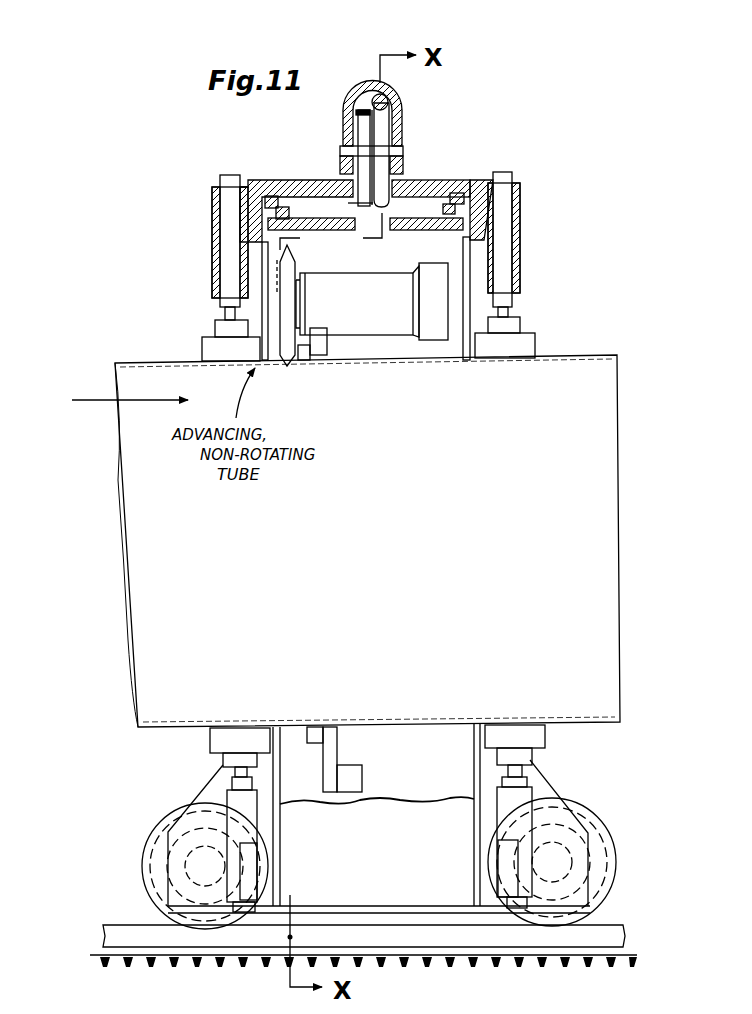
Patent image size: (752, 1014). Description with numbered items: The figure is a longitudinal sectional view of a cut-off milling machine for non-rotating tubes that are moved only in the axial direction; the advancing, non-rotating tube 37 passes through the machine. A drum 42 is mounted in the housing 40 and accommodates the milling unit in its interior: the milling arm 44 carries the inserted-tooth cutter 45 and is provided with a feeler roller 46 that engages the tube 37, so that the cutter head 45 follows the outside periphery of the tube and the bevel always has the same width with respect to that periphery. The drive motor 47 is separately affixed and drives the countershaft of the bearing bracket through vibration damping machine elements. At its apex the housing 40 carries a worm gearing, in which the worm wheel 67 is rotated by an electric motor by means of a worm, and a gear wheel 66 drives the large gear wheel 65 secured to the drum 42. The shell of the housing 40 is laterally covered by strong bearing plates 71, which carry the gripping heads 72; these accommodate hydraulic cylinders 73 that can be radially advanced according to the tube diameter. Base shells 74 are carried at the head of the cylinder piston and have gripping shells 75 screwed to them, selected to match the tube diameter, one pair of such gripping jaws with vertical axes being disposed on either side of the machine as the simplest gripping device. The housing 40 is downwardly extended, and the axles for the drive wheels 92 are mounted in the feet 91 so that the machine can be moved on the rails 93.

The tube 37 is at (598, 399).
The housing 40 is at (288, 187).
The drum 42 is at (313, 218).
The milling arm 44 is at (380, 300).
The inserted-tooth cutter 45 is at (288, 323).
The feeler roller 46 is at (306, 355).
The drive motor 47 is at (430, 322).
The large gear wheel 65 is at (364, 222).
The gear wheel 66 is at (400, 100).
The worm wheel 67 is at (382, 120).
The bearing plates 71 is at (477, 180).
The gripping heads 72 is at (490, 180).
The hydraulic cylinders 73 is at (502, 193).
The base shells 74 is at (518, 340).
The gripping shells 75 is at (523, 352).
The feet 91 is at (218, 782).
The drive wheels 92 is at (172, 813).
The rails 93 is at (125, 935).